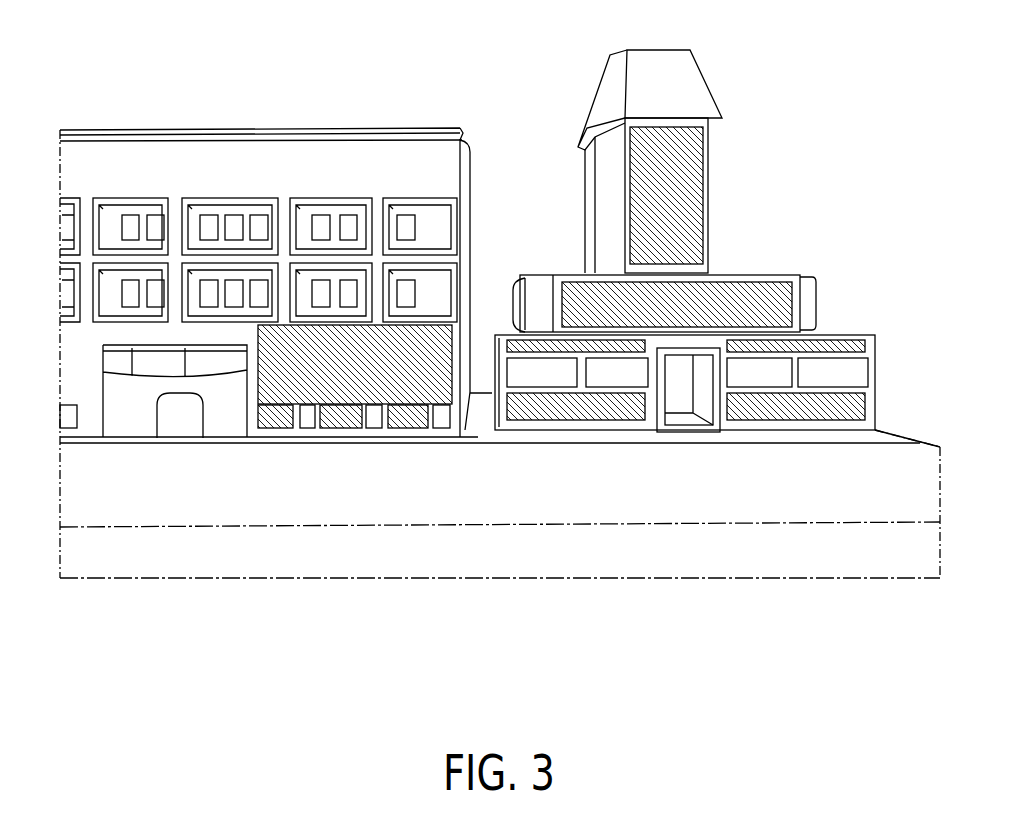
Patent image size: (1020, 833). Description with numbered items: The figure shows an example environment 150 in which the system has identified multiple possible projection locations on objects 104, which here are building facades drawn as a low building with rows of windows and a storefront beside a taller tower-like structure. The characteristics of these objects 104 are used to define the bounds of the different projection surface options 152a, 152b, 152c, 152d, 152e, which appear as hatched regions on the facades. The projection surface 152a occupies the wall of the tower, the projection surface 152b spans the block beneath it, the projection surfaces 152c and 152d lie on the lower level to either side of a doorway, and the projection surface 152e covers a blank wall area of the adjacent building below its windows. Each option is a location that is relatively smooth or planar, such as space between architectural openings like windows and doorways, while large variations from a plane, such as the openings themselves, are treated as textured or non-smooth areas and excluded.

The environment 150 is at (500, 300).
The objects 104 is at (708, 90).
The projection surface option 152a is at (708, 207).
The projection surface option 152b is at (775, 298).
The projection surface option 152c is at (820, 413).
The projection surface option 152d is at (575, 413).
The projection surface option 152e is at (347, 373).